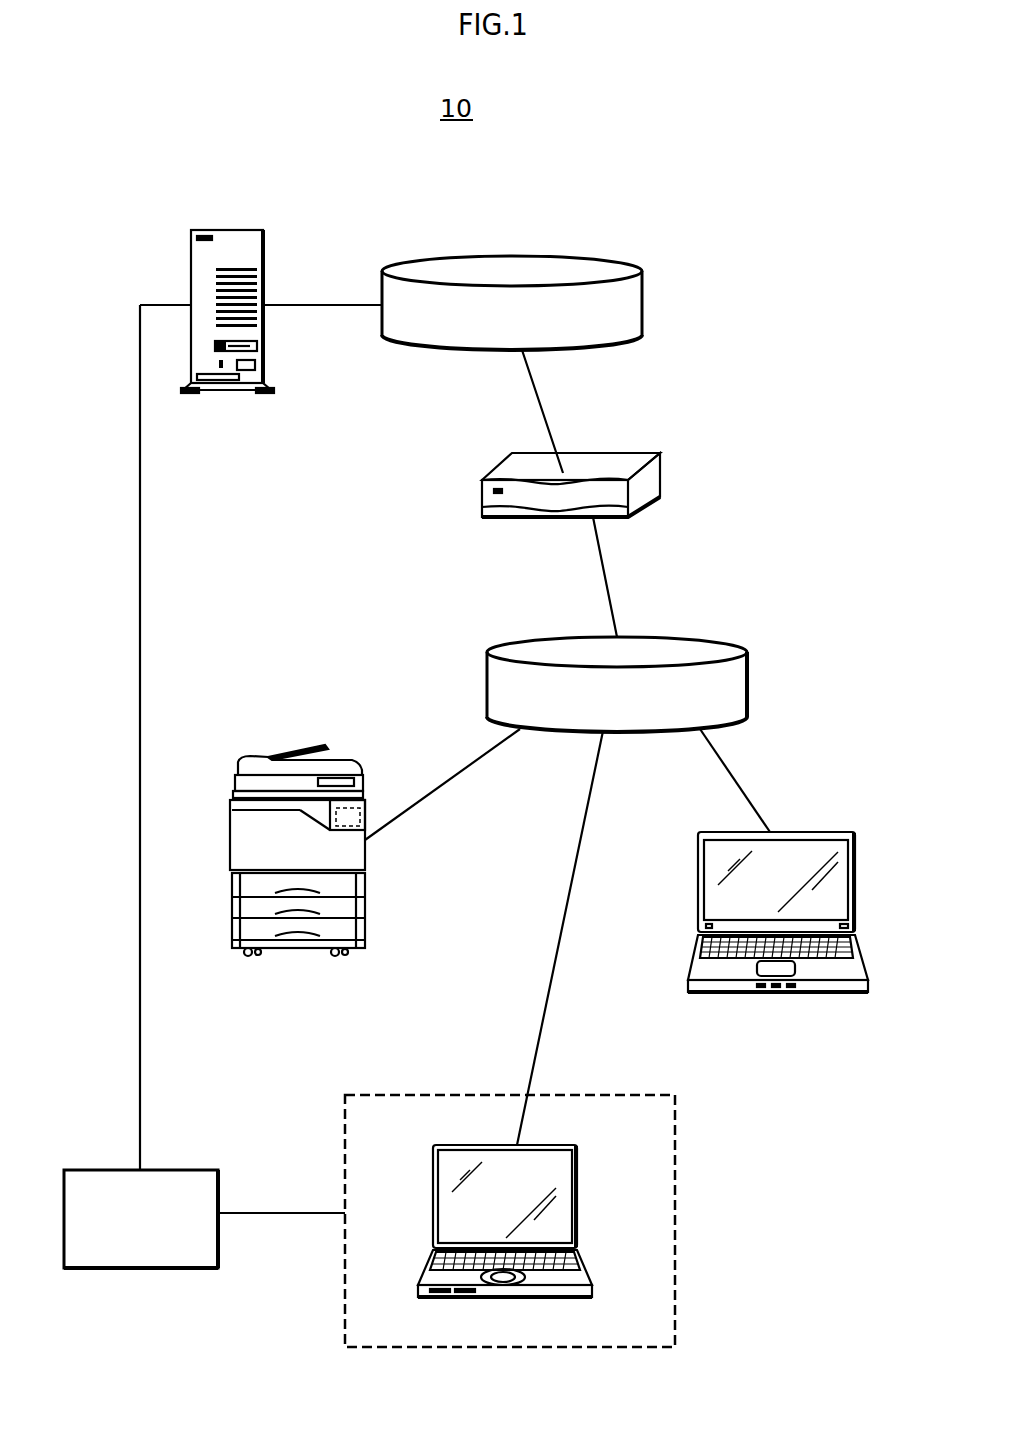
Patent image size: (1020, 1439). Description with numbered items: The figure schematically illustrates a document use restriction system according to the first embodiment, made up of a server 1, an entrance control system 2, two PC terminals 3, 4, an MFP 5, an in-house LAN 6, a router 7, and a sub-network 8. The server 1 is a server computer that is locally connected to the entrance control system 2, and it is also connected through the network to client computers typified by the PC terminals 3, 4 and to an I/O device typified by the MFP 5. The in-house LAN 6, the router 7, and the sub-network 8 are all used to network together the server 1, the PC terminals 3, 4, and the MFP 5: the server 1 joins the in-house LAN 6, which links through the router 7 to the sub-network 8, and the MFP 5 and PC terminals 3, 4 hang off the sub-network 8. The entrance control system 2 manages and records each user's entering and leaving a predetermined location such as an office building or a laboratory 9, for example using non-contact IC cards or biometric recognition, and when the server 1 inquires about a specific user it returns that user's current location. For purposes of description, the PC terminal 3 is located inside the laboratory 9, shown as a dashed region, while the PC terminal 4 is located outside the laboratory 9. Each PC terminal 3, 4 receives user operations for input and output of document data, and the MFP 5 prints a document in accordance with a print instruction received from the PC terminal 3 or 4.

The server 1 is at (248, 229).
The entrance control system 2 is at (176, 1170).
The PC terminal 3 is at (545, 1145).
The PC terminal 4 is at (822, 832).
The MFP 5 is at (345, 757).
The in-house LAN 6 is at (612, 260).
The router 7 is at (626, 457).
The sub-network 8 is at (708, 640).
The laboratory 9 is at (618, 1095).